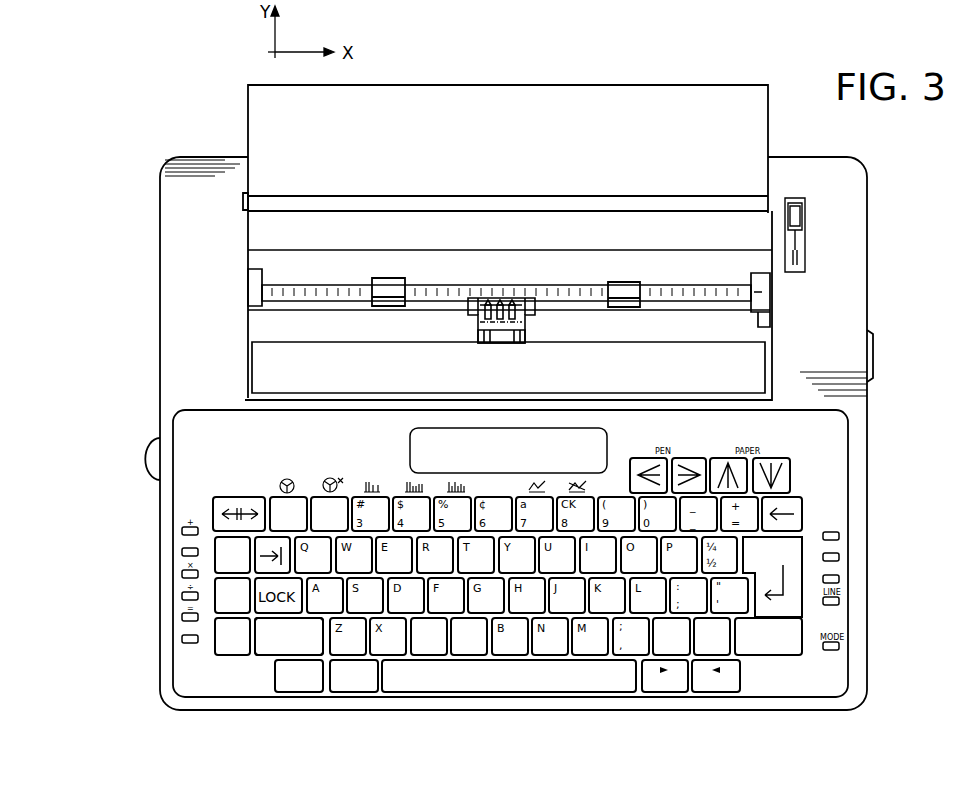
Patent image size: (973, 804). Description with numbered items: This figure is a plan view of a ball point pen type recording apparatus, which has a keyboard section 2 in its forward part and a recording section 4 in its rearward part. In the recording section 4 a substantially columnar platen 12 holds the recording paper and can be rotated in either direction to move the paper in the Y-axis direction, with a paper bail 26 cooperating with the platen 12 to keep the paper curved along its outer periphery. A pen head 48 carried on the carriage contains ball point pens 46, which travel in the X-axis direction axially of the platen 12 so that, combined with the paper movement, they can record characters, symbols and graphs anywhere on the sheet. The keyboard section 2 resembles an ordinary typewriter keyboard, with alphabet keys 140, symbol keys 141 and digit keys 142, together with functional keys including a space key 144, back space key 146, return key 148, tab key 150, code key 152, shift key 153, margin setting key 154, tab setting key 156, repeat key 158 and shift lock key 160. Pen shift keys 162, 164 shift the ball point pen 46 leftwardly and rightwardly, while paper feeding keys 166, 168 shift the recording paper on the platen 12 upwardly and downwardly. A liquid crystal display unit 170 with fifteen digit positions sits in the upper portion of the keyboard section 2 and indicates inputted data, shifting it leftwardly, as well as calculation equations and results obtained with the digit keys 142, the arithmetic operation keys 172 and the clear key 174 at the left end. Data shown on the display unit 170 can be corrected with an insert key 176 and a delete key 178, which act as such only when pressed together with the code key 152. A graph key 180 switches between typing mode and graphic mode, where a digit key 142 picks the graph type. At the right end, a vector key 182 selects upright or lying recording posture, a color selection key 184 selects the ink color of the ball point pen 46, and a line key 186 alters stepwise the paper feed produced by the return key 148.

The keyboard section 2 is at (872, 500).
The recording section 4 is at (872, 197).
The platen 12 is at (544, 263).
The paper bail 26 is at (400, 284).
The ball point pens 46 is at (505, 344).
The pen head 48 is at (536, 328).
The alphabet keys 140 is at (430, 655).
The symbol keys 141 is at (643, 655).
The digit keys 142 is at (298, 498).
The space key 144 is at (540, 693).
The back space key 146 is at (800, 506).
The return key 148 is at (797, 610).
The tab key 150 is at (268, 540).
The code key 152 is at (216, 656).
The shift key 153 is at (263, 656).
The margin setting key 154 is at (215, 545).
The tab setting key 156 is at (215, 606).
The repeat key 158 is at (358, 693).
The shift lock key 160 is at (263, 654).
The pen shift key 162 is at (637, 464).
The pen shift key 164 is at (682, 464).
The paper feeding key 166 is at (722, 464).
The paper feeding key 168 is at (775, 464).
The liquid crystal display unit 170 is at (410, 446).
The arithmetic operation keys 172 is at (182, 552).
The clear key 174 is at (182, 640).
The insert key 176 is at (666, 693).
The delete key 178 is at (726, 693).
The graph key 180 is at (307, 693).
The vector key 182 is at (840, 538).
The color selection key 184 is at (839, 557).
The line key 186 is at (839, 579).